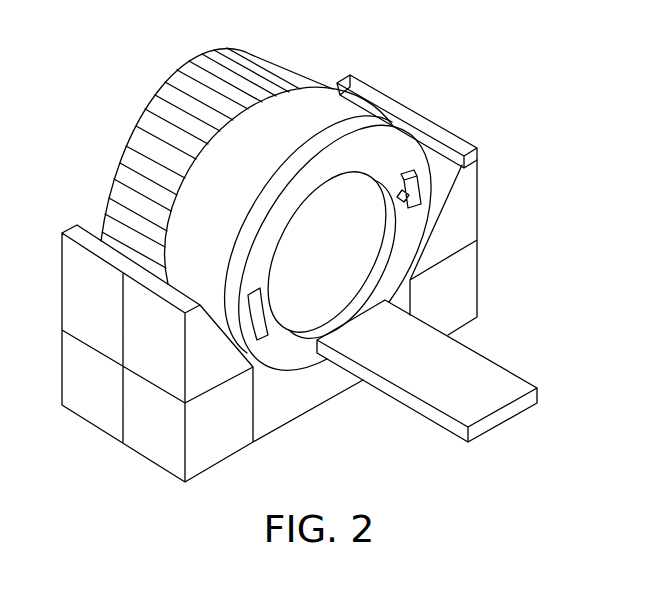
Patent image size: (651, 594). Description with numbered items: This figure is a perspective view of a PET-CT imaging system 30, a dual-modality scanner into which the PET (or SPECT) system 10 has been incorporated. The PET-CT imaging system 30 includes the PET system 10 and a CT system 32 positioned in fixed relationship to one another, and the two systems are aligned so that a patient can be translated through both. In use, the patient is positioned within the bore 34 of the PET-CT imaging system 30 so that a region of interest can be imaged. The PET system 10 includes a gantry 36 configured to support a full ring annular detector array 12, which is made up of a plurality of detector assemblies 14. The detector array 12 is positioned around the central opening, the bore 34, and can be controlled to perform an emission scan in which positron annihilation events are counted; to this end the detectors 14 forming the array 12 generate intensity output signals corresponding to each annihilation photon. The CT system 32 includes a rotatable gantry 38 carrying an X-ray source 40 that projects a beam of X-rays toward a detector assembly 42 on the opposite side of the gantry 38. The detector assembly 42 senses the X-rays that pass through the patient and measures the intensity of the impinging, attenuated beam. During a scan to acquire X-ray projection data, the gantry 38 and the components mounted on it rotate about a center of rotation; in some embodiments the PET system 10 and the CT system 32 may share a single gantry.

The PET system 10 is at (100, 177).
The detector array 12 is at (143, 113).
The detector assemblies 14 is at (197, 70).
The PET-CT imaging system 30 is at (503, 141).
The CT system 32 is at (322, 385).
The bore 34 is at (334, 280).
The gantry 36 is at (284, 64).
The rotatable gantry 38 is at (403, 143).
The X-ray source 40 is at (421, 187).
The detector assembly 42 is at (266, 337).